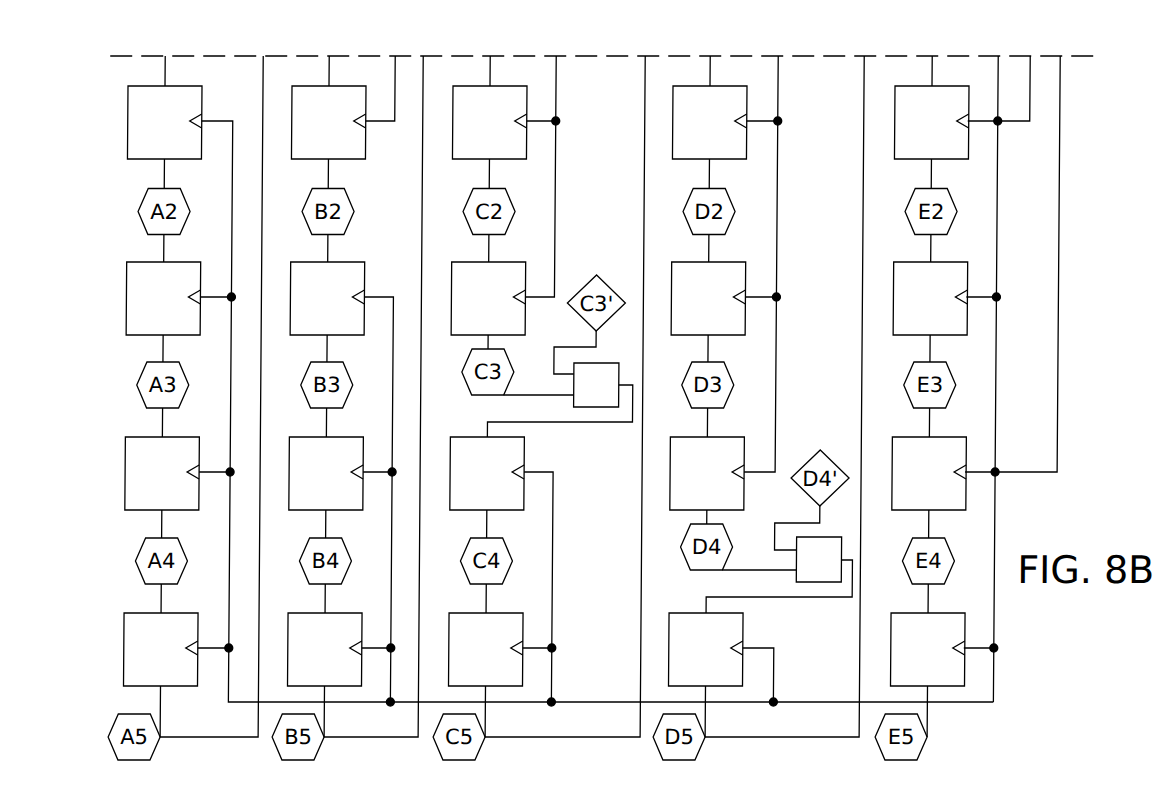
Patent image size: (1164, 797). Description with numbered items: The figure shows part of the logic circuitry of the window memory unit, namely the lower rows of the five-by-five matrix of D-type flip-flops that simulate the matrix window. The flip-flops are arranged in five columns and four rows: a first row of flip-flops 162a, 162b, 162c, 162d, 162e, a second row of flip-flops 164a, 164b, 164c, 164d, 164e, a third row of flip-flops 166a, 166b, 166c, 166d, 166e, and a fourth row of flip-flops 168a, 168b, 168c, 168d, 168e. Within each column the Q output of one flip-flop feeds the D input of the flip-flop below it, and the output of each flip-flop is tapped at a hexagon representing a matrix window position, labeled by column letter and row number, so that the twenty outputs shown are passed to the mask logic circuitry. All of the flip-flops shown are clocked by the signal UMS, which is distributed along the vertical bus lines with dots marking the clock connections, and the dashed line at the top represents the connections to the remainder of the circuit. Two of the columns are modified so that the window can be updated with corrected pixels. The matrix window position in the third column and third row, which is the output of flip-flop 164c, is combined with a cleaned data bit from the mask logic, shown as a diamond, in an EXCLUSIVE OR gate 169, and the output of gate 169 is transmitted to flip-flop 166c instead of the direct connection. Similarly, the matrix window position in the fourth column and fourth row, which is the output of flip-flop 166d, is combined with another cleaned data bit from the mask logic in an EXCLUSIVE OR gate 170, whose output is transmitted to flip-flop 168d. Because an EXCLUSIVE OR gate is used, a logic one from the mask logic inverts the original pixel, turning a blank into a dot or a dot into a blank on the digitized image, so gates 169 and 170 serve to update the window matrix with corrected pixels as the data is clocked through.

The D-type flip-flop 162a is at (148, 154).
The D-type flip-flop 162b is at (350, 156).
The D-type flip-flop 162c is at (511, 152).
The D-type flip-flop 162d is at (735, 155).
The D-type flip-flop 162e is at (956, 153).
The D-type flip-flop 164a is at (148, 329).
The D-type flip-flop 164b is at (354, 329).
The D-type flip-flop 164c is at (462, 327).
The D-type flip-flop 164d is at (737, 328).
The D-type flip-flop 164e is at (954, 328).
The D-type flip-flop 166a is at (148, 505).
The D-type flip-flop 166b is at (345, 502).
The D-type flip-flop 166c is at (520, 505).
The D-type flip-flop 166d is at (688, 498).
The D-type flip-flop 166e is at (954, 502).
The D-type flip-flop 168a is at (146, 626).
The D-type flip-flop 168b is at (340, 623).
The D-type flip-flop 168c is at (505, 620).
The D-type flip-flop 168d is at (740, 624).
The D-type flip-flop 168e is at (948, 619).
The EXCLUSIVE OR gate 169 is at (603, 401).
The EXCLUSIVE OR gate 170 is at (809, 576).